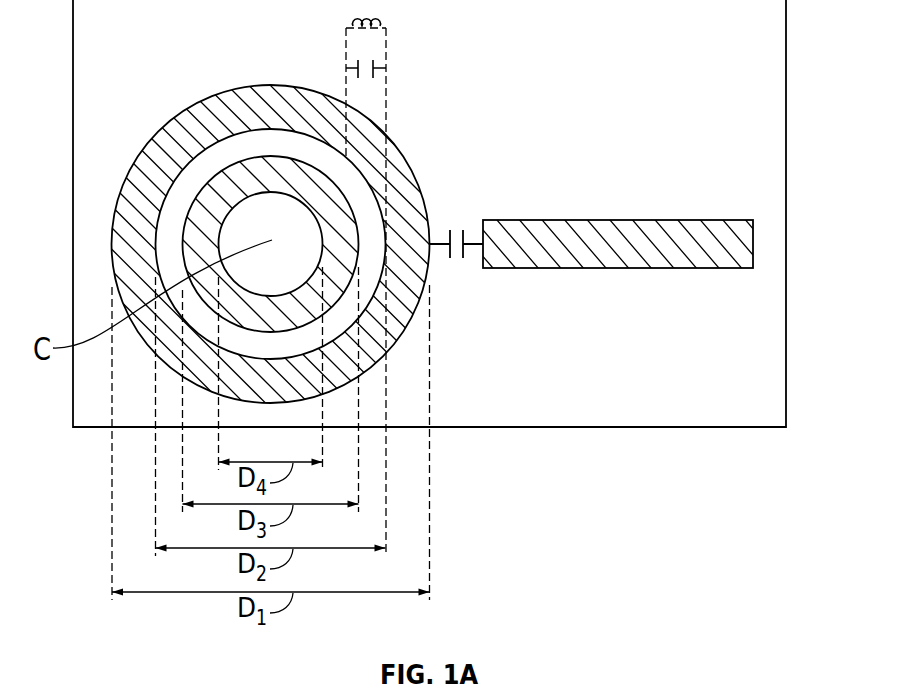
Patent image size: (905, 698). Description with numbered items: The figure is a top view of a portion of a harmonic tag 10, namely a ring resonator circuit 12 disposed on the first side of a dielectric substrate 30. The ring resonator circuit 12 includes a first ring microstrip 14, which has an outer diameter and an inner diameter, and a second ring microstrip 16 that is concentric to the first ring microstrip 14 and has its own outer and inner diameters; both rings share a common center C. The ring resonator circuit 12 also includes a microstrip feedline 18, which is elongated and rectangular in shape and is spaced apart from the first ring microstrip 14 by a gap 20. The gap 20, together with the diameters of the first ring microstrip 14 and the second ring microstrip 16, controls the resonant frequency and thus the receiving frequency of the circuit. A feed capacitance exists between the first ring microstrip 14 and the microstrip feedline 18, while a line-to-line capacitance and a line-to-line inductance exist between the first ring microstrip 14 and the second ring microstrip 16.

The harmonic tag 10 is at (516, 40).
The ring resonator circuit 12 is at (514, 110).
The first ring microstrip 14 is at (358, 318).
The second ring microstrip 16 is at (184, 230).
The microstrip feedline 18 is at (703, 220).
The gap 20 is at (466, 274).
The dielectric substrate 30 is at (787, 213).